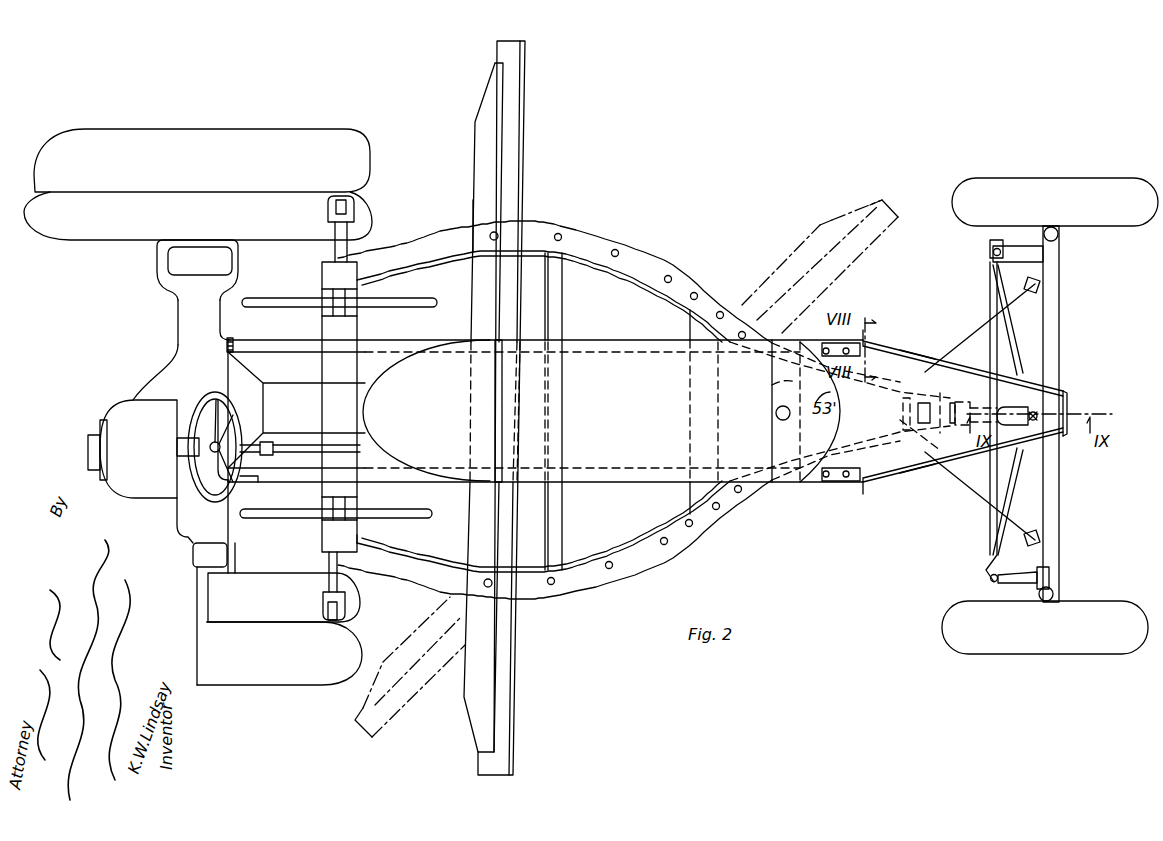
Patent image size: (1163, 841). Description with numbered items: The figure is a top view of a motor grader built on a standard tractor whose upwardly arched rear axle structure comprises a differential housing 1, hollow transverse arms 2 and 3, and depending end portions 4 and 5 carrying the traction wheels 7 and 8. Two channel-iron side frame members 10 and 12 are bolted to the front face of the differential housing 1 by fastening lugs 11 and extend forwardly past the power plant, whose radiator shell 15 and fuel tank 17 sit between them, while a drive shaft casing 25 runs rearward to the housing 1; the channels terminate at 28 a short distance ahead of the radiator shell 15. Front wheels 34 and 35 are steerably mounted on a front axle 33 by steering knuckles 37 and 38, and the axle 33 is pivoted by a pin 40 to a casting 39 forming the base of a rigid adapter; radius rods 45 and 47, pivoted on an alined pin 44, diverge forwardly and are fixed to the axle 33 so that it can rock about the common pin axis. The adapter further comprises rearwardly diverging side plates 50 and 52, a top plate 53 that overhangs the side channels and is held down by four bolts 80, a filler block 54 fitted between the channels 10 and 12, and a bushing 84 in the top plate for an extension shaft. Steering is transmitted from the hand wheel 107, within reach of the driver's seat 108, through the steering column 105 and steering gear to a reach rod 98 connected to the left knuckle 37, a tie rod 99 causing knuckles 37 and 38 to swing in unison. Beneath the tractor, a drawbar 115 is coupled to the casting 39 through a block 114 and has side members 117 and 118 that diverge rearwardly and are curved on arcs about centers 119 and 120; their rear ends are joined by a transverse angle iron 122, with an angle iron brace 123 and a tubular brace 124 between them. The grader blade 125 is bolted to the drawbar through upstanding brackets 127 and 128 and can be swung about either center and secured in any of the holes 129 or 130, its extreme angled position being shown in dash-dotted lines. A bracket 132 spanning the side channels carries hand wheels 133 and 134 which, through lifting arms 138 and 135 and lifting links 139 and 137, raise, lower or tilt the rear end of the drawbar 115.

The differential housing 1 is at (135, 385).
The hollow transverse arm 2 is at (178, 310).
The hollow transverse arm 3 is at (173, 514).
The depending end portion 4 is at (156, 260).
The depending end portion 5 is at (236, 556).
The traction wheel 7 is at (368, 170).
The traction wheel 8 is at (360, 638).
The side frame member 10 is at (262, 340).
The fastening lugs 11 is at (237, 338).
The side frame member 12 is at (268, 480).
The radiator shell 15 is at (774, 484).
The fuel tank 17 is at (442, 474).
The drive shaft casing 25 is at (306, 386).
The forward end of side channels 28 is at (872, 350).
The casting 39 is at (935, 440).
The front axle 33 is at (1060, 362).
The front wheel 34 is at (1122, 226).
The front wheel 35 is at (1110, 601).
The steering knuckle 37 is at (1060, 266).
The steering knuckle 38 is at (1052, 588).
The pivot pin 40 is at (1064, 432).
The pivot pin 44 is at (958, 408).
The radius rod 45 is at (984, 360).
The radius rod 47 is at (1003, 504).
The side plate 50 is at (908, 355).
The side plate 52 is at (900, 472).
The top plate 53 is at (1070, 406).
The filler block 54 is at (778, 388).
The bolts 80 is at (834, 348).
The bushing 84 is at (1008, 407).
The reach rod 98 is at (1010, 338).
The tie rod 99 is at (990, 520).
The steering column 105 is at (298, 445).
The hand wheel 107 is at (207, 398).
The driver's seat 108 is at (116, 484).
The block 114 is at (905, 425).
The drawbar 115 is at (632, 280).
The side member 117 is at (672, 260).
The side member 118 is at (646, 552).
The center 119 is at (484, 583).
The center 120 is at (490, 237).
The transverse angle iron 122 is at (354, 538).
The angle iron brace 123 is at (560, 526).
The tubular brace 124 is at (688, 492).
The grader blade 125 is at (508, 640).
The upstanding bracket 127 is at (473, 258).
The upstanding bracket 128 is at (474, 566).
The holes 129 is at (562, 236).
The holes 130 is at (554, 584).
The bracket 132 is at (322, 408).
The hand wheel 133 is at (378, 307).
The hand wheel 134 is at (374, 518).
The lifting arm 135 is at (329, 590).
The lifting link 137 is at (334, 622).
The lifting arm 138 is at (335, 232).
The lifting link 139 is at (345, 188).